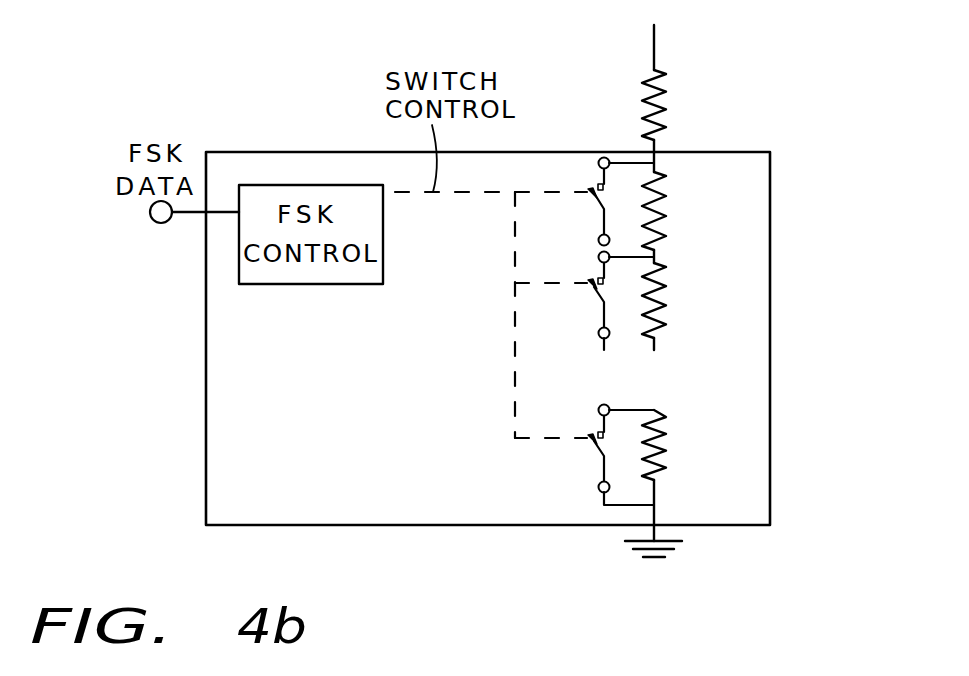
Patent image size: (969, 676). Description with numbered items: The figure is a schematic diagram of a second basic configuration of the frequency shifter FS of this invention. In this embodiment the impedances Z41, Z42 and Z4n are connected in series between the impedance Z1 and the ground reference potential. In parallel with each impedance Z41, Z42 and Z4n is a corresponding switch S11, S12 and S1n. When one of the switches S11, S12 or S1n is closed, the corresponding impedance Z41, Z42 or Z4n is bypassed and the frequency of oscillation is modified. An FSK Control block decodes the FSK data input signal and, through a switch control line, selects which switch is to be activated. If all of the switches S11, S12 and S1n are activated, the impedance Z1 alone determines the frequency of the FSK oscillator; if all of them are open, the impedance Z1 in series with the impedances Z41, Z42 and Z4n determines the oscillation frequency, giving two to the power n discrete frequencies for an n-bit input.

The frequency shifter FS is at (301, 151).
The impedance Z1 is at (682, 98).
The impedance Z41 is at (684, 217).
The impedance Z42 is at (685, 306).
The impedance Z4n is at (685, 475).
The switch S11 is at (600, 202).
The switch S12 is at (599, 301).
The switch S1n is at (589, 455).